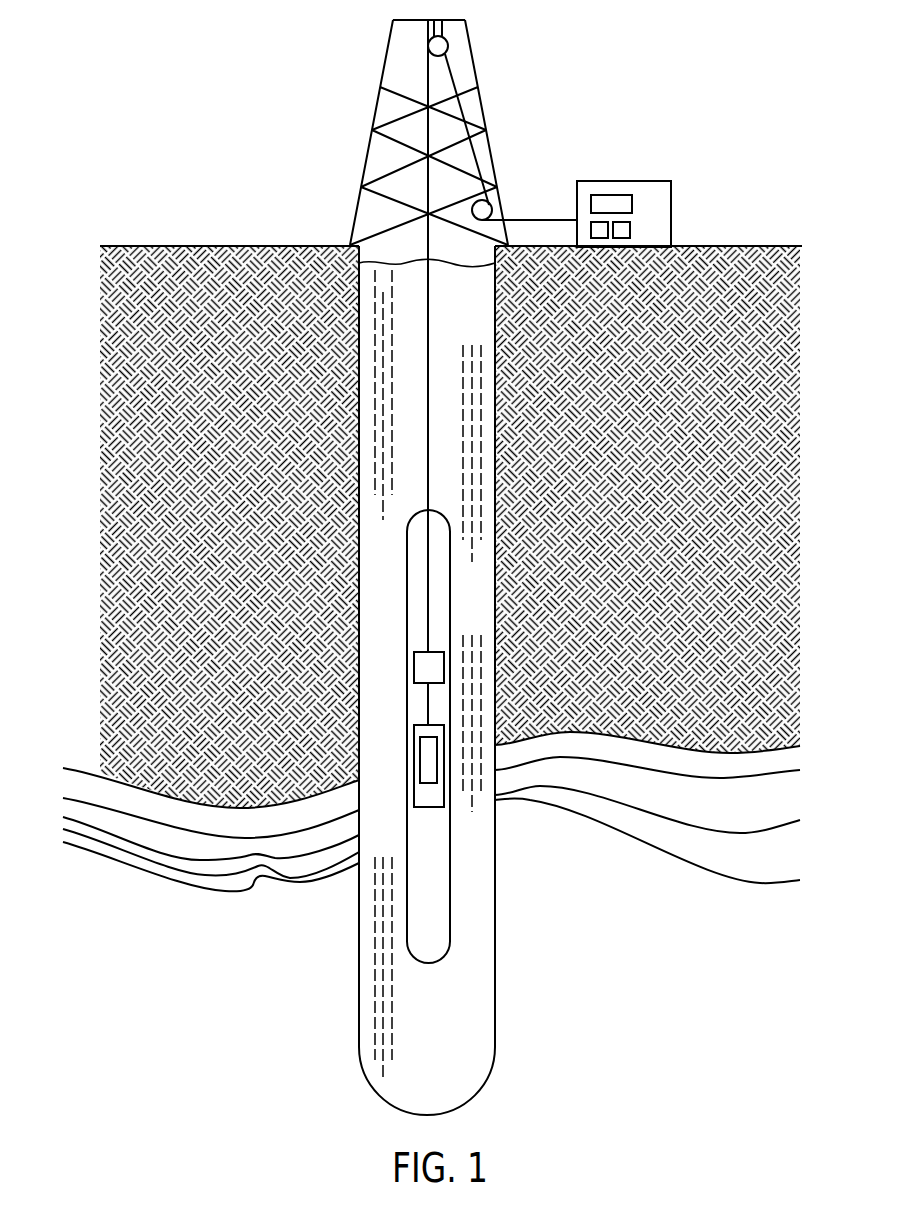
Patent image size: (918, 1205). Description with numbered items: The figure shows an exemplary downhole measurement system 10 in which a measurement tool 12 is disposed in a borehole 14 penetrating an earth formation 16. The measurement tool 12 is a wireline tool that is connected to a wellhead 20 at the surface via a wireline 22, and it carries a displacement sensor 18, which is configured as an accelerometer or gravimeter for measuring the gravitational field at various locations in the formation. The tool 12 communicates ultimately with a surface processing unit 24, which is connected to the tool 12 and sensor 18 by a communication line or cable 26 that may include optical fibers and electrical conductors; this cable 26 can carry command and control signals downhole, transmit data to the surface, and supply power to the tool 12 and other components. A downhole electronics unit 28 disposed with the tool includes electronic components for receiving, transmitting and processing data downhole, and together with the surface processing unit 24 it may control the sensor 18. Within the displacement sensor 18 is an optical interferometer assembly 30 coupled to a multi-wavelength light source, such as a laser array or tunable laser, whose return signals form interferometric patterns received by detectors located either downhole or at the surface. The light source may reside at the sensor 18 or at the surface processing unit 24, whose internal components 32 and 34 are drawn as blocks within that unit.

The well system 10 is at (215, 92).
The downhole tool 12 is at (437, 884).
The wellbore 14 is at (375, 1042).
The subterranean formation 16 is at (627, 720).
The sensor housing 18 is at (423, 808).
The derrick 20 is at (372, 131).
The wireline cable 22 is at (428, 333).
The surface unit 24 is at (672, 212).
The tool body 26 is at (428, 565).
The electronics module 28 is at (414, 664).
The sensor 30 is at (426, 757).
The processor 32 is at (591, 200).
The memory 34 is at (627, 232).